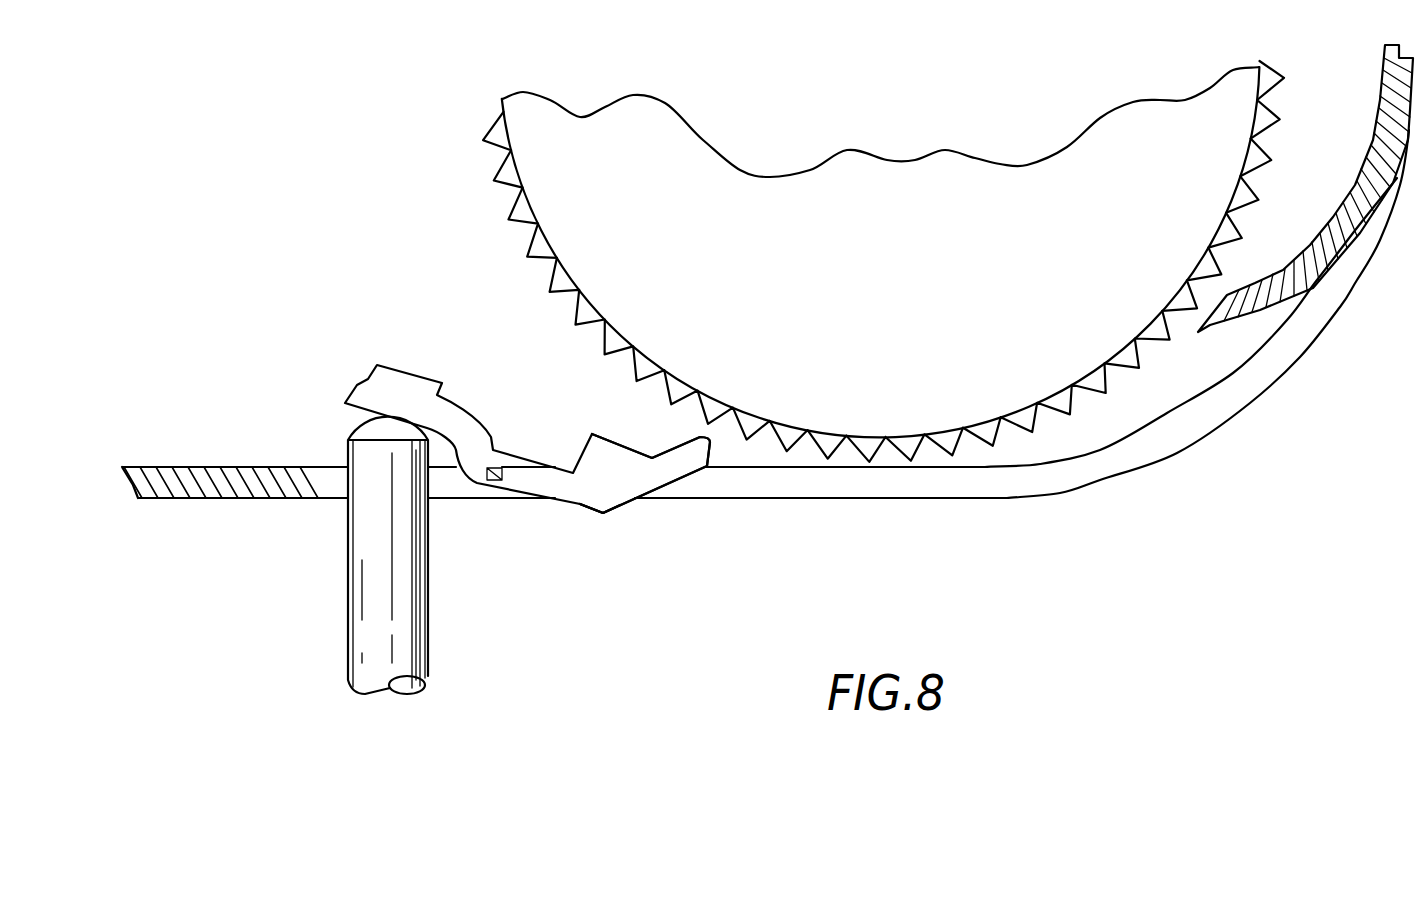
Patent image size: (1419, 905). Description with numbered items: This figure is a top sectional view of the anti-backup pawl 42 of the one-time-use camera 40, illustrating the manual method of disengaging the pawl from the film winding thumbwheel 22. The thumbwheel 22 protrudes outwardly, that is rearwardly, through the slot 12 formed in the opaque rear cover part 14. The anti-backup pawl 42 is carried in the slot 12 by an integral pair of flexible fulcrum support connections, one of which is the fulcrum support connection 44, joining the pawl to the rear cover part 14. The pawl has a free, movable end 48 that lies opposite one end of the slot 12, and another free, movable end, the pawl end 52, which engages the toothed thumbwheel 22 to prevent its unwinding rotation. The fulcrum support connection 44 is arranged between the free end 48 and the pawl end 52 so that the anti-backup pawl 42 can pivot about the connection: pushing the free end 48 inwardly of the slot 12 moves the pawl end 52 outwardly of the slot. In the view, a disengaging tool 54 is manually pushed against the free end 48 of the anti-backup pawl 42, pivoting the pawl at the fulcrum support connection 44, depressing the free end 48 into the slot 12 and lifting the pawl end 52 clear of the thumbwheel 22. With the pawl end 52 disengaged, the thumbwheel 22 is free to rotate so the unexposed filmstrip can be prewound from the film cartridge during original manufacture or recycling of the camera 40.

The slot 12 is at (332, 437).
The opaque rear cover part 14 is at (235, 487).
The film winding thumbwheel 22 is at (1027, 395).
The one-time-use camera 40 is at (1272, 416).
The anti-backup pawl 42 is at (577, 517).
The flexible fulcrum support connection 44 is at (495, 481).
The free end 48 is at (362, 390).
The pawl end 52 is at (680, 465).
The disengaging tool 54 is at (418, 646).